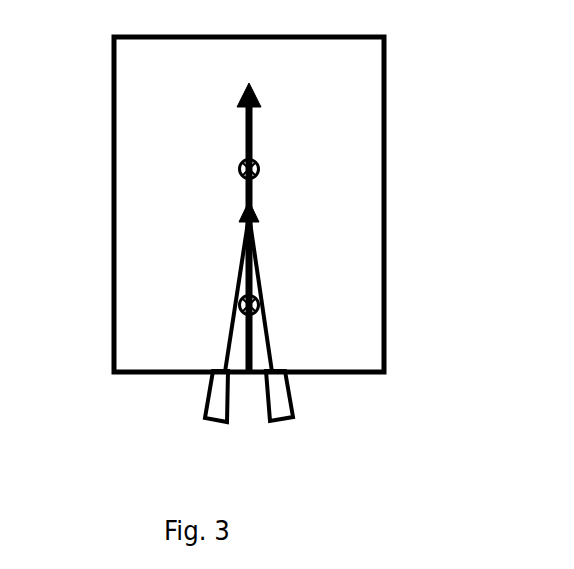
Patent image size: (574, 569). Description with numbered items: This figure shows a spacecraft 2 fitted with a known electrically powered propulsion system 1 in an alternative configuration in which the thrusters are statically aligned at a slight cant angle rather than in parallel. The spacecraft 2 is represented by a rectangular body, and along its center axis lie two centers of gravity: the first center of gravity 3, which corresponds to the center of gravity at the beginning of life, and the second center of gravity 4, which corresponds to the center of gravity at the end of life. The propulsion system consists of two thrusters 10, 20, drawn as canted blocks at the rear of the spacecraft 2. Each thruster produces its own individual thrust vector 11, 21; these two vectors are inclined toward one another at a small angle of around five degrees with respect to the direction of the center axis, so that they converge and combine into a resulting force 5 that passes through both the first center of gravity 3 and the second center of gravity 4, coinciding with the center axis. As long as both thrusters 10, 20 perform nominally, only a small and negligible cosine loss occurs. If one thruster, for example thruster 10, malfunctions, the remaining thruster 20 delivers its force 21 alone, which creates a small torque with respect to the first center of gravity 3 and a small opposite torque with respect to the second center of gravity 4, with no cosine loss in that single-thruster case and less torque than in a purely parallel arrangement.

The electrically powered propulsion system 1 is at (140, 402).
The spacecraft 2 is at (386, 170).
The first center of gravity 3 is at (259, 304).
The second center of gravity 4 is at (259, 169).
The resulting force 5 is at (253, 131).
The thruster 10 is at (217, 424).
The thrust vector 11 is at (231, 316).
The thruster 20 is at (283, 423).
The thrust vector 21 is at (270, 336).